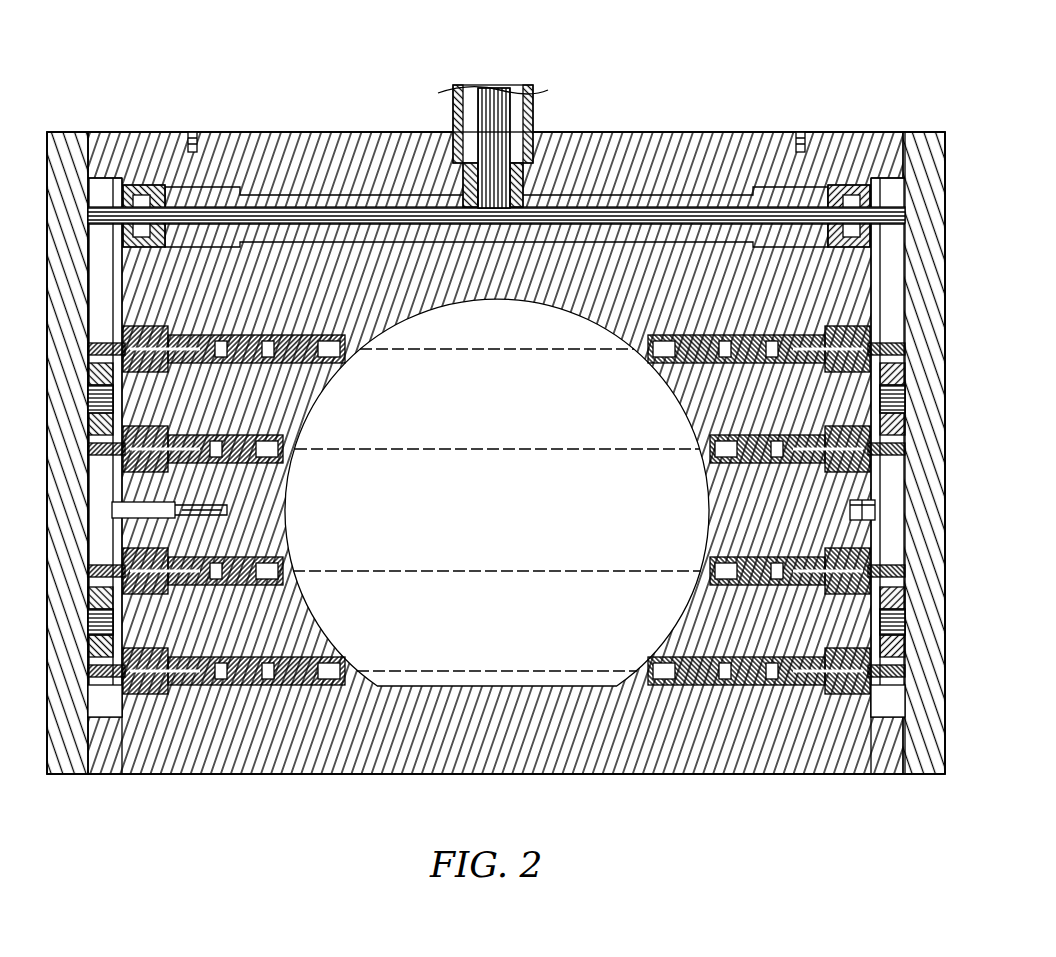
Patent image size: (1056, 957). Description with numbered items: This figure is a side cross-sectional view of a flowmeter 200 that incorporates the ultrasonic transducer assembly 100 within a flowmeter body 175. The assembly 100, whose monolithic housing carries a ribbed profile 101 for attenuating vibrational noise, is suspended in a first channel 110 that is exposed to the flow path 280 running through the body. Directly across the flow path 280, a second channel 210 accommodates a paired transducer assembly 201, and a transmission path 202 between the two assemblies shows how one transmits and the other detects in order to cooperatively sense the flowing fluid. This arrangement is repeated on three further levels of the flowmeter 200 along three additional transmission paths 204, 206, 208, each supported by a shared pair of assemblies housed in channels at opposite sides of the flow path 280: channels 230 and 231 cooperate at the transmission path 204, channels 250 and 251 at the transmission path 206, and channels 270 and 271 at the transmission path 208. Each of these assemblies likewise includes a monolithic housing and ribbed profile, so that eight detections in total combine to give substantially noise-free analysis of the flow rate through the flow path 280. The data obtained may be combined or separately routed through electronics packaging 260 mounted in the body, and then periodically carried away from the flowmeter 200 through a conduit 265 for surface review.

The transducer assembly 100 is at (270, 312).
The ribbed profile 101 is at (203, 334).
The channel 110 is at (343, 352).
The flowmeter body 175 is at (635, 145).
The flowmeter 200 is at (824, 51).
The transducer assembly 201 is at (782, 320).
The transmission path 202 is at (445, 350).
The transmission path 204 is at (472, 450).
The transmission path 206 is at (445, 573).
The transmission path 208 is at (535, 670).
The second channel 210 is at (655, 357).
The channel 230 is at (291, 461).
The channel 231 is at (695, 462).
The channel 250 is at (295, 561).
The channel 251 is at (696, 560).
The electronics packaging 260 is at (380, 186).
The conduit 265 is at (533, 117).
The channel 270 is at (358, 656).
The channel 271 is at (636, 660).
The flow path 280 is at (511, 553).